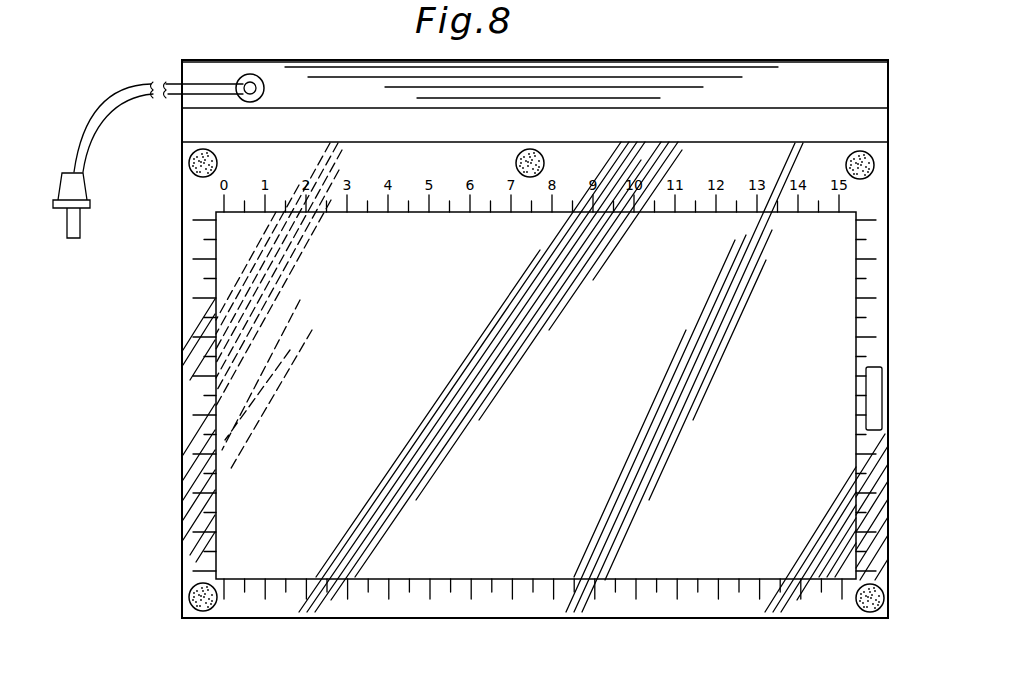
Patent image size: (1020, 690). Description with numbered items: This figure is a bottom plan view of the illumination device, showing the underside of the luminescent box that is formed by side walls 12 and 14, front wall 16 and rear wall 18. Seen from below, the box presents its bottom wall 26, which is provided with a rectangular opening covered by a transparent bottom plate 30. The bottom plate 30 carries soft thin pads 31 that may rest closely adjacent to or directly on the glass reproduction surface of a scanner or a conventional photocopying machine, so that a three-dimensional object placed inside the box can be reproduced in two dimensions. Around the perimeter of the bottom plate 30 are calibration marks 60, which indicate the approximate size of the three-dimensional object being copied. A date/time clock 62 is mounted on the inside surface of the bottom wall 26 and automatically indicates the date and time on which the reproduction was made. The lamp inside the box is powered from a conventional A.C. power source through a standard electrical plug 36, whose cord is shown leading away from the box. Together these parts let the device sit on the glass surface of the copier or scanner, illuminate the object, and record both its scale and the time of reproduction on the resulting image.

The side wall 12 is at (182, 408).
The side wall 14 is at (889, 313).
The front wall 16 is at (509, 618).
The rear wall 18 is at (747, 60).
The bottom wall 26 is at (875, 127).
The transparent bottom plate 30 is at (790, 375).
The soft thin pads 31 is at (876, 164).
The plug 36 is at (86, 185).
The calibration marks 60 is at (205, 296).
The date/time clock 62 is at (876, 394).